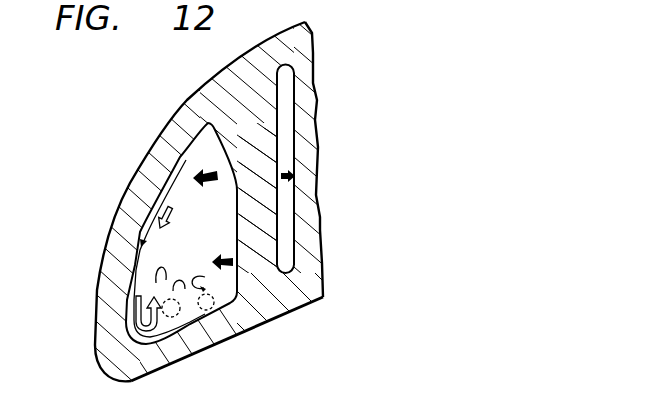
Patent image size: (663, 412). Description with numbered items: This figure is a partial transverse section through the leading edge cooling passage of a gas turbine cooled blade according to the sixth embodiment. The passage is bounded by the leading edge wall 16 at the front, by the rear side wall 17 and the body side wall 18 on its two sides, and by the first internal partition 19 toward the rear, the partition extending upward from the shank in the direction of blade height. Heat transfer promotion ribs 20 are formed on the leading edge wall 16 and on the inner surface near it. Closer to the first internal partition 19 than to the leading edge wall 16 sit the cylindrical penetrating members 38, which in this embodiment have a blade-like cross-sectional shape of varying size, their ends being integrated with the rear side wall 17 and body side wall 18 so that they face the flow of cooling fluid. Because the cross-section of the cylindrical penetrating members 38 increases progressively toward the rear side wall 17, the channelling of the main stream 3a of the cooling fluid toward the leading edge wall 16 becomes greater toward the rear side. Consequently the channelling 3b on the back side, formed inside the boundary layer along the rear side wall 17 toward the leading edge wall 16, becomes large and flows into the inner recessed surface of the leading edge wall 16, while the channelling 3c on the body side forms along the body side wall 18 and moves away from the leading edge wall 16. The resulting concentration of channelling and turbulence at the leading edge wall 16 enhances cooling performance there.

The main stream of the cooling fluid 3a is at (210, 167).
The channelling on the back side 3b is at (156, 206).
The channelling on the body side 3c is at (204, 306).
The leading edge wall 16 is at (115, 352).
The rear side wall 17 is at (158, 149).
The body side wall 18 is at (222, 327).
The first internal partition 19 is at (315, 202).
The heat transfer promotion ribs 20 is at (133, 270).
The cylindrical penetrating members 38 is at (262, 253).